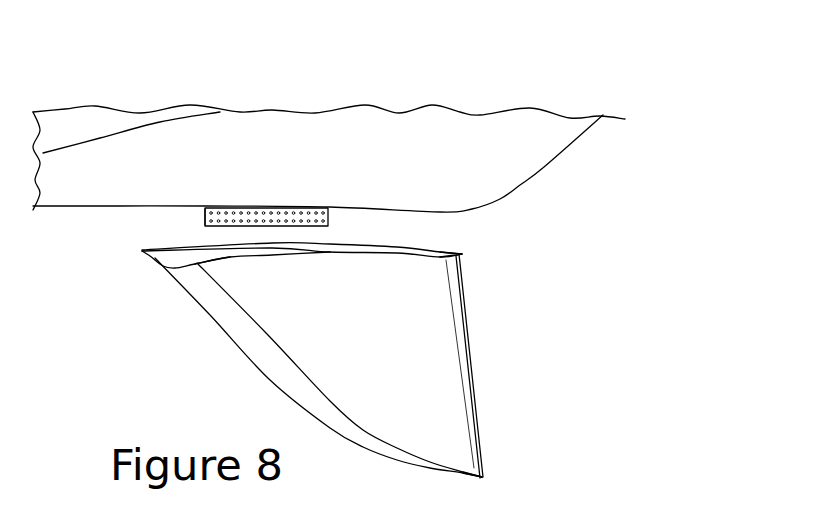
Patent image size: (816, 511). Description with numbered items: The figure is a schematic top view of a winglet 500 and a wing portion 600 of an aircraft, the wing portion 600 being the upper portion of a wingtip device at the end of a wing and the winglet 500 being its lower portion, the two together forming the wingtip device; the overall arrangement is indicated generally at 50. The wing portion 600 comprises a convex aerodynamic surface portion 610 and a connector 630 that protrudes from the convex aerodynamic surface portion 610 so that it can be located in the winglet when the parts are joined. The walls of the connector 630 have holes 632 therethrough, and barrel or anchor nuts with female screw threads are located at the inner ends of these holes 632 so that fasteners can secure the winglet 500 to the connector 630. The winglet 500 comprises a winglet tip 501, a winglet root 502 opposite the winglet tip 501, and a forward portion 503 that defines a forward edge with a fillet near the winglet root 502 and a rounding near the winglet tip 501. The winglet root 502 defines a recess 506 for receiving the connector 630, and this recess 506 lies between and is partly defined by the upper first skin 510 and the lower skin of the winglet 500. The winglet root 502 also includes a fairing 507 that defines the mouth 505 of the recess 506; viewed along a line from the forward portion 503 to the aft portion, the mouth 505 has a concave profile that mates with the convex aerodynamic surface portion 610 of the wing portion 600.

The aircraft structure 50 is at (562, 70).
The wing portion 600 is at (606, 180).
The convex aerodynamic surface portion 610 is at (126, 192).
The connector 630 is at (329, 213).
The holes 632 is at (205, 224).
The winglet 500 is at (527, 377).
The winglet tip 501 is at (472, 480).
The winglet root 502 is at (458, 252).
The forward portion 503 is at (292, 332).
The mouth 505 is at (227, 247).
The recess 506 is at (225, 263).
The fairing 507 is at (170, 260).
The upper first skin 510 is at (427, 418).